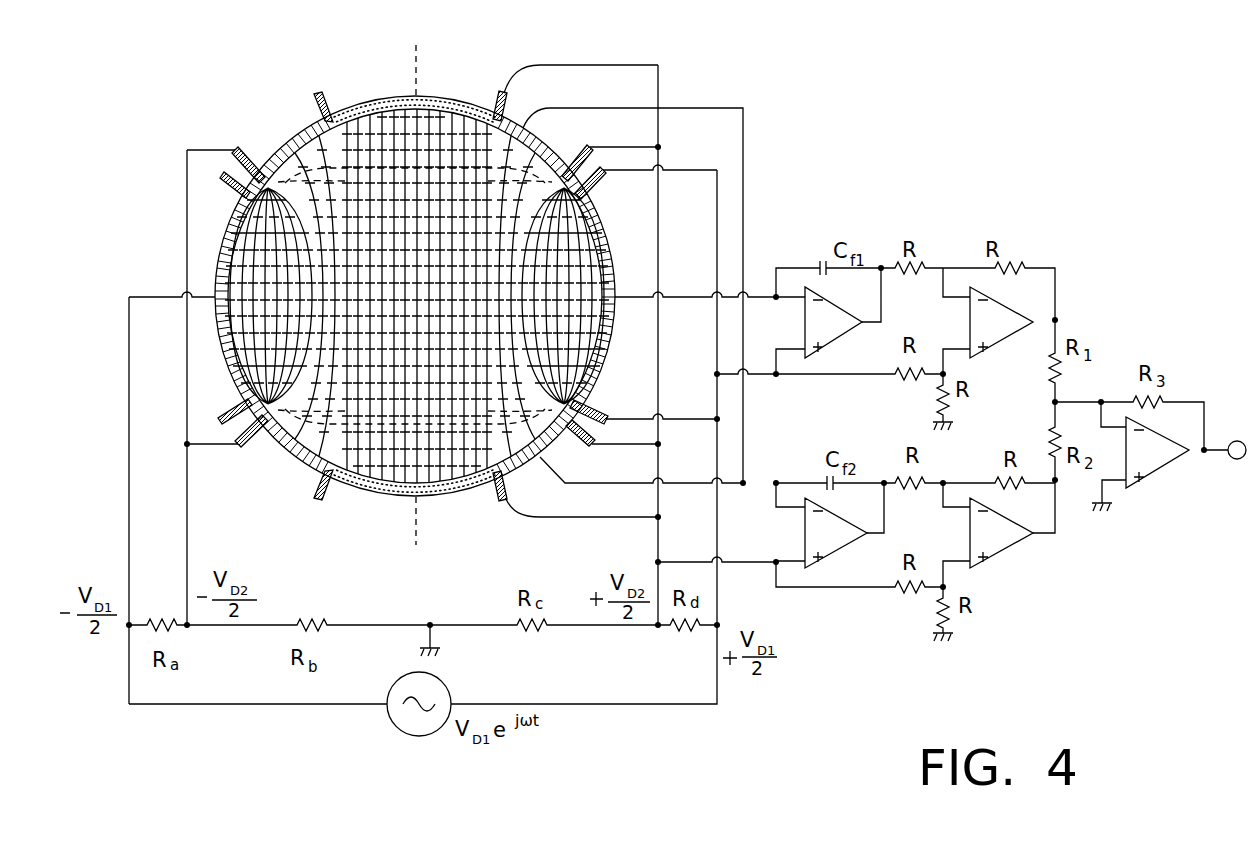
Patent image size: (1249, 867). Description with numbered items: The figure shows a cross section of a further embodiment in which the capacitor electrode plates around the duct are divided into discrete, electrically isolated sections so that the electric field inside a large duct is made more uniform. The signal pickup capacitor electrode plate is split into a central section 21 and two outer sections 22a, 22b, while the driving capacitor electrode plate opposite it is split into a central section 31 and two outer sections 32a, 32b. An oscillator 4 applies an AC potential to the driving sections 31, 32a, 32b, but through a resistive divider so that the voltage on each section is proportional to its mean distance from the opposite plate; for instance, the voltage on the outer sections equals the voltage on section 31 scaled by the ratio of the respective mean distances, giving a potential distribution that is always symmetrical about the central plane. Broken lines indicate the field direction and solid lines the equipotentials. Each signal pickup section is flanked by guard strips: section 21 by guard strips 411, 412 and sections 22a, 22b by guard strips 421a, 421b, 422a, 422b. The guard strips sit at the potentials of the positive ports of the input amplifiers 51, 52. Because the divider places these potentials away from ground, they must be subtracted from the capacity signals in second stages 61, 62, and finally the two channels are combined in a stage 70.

The oscillator 4 is at (388, 717).
The signal pickup capacitor electrode plate section 21 is at (608, 268).
The signal pickup capacitor electrode plate section 22a is at (525, 128).
The signal pickup capacitor electrode plate section 22b is at (527, 472).
The driving capacitor electrode plate section 31 is at (223, 242).
The driving capacitor electrode plate section 32a is at (277, 157).
The driving capacitor electrode plate section 32b is at (280, 453).
The guard strip 411 is at (590, 185).
The guard strip 412 is at (598, 413).
The guard strip 421a is at (502, 96).
The guard strip 421b is at (498, 503).
The guard strip 422a is at (566, 158).
The guard strip 422b is at (573, 440).
The input amplifier 51 is at (803, 315).
The input amplifier 52 is at (828, 557).
The second stage 61 is at (968, 318).
The second stage 62 is at (1003, 553).
The combining stage 70 is at (1158, 470).